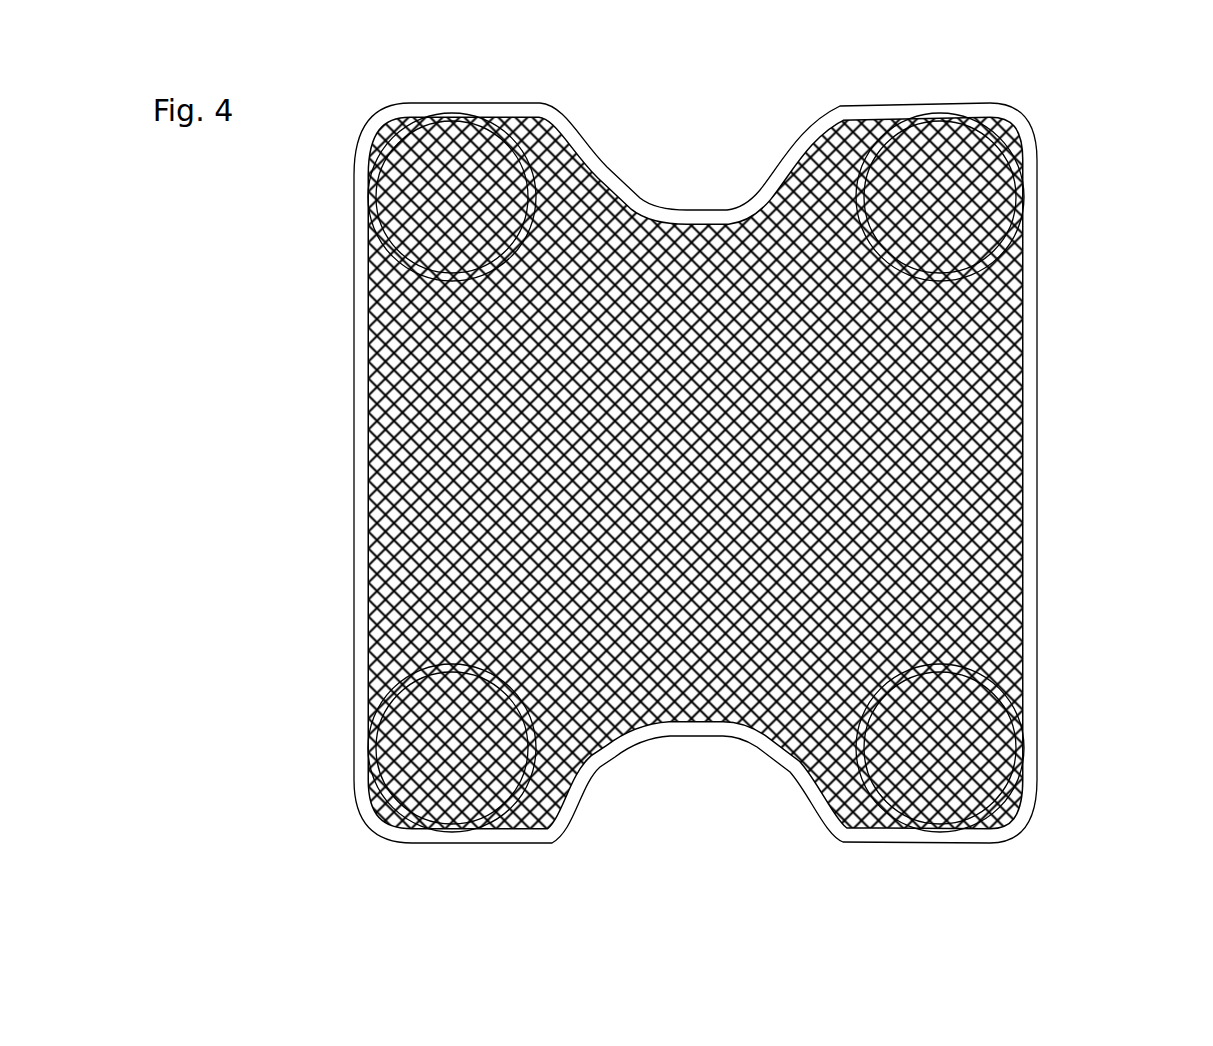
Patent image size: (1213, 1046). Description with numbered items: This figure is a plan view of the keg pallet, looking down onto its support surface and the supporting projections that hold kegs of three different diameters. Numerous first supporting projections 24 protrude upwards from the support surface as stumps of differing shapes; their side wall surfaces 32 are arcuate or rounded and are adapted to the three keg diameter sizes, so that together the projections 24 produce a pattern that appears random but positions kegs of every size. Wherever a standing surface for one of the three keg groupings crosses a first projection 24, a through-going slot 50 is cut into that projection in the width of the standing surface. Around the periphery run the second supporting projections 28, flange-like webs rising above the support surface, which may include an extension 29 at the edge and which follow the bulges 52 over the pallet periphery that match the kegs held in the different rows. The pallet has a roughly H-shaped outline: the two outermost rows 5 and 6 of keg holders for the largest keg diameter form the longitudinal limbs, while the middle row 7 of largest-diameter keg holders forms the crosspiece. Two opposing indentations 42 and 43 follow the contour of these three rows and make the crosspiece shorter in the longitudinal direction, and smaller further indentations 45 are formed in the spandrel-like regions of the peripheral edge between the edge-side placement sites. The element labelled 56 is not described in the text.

The outermost row of keg holders 5 is at (408, 780).
The outermost row of keg holders 6 is at (988, 787).
The middle row of keg holders 7 is at (664, 232).
The first supporting projections 24 is at (988, 178).
The second supporting projections 28 is at (703, 216).
The extension of the second supporting projections 29 is at (560, 135).
The side wall surfaces 32 is at (990, 143).
The indentation 42 is at (626, 138).
The indentation 43 is at (676, 768).
The further indentations 45 is at (1035, 602).
The through-going slots 50 is at (840, 180).
The bulges 52 is at (748, 196).
The connector 56 is at (810, 172).